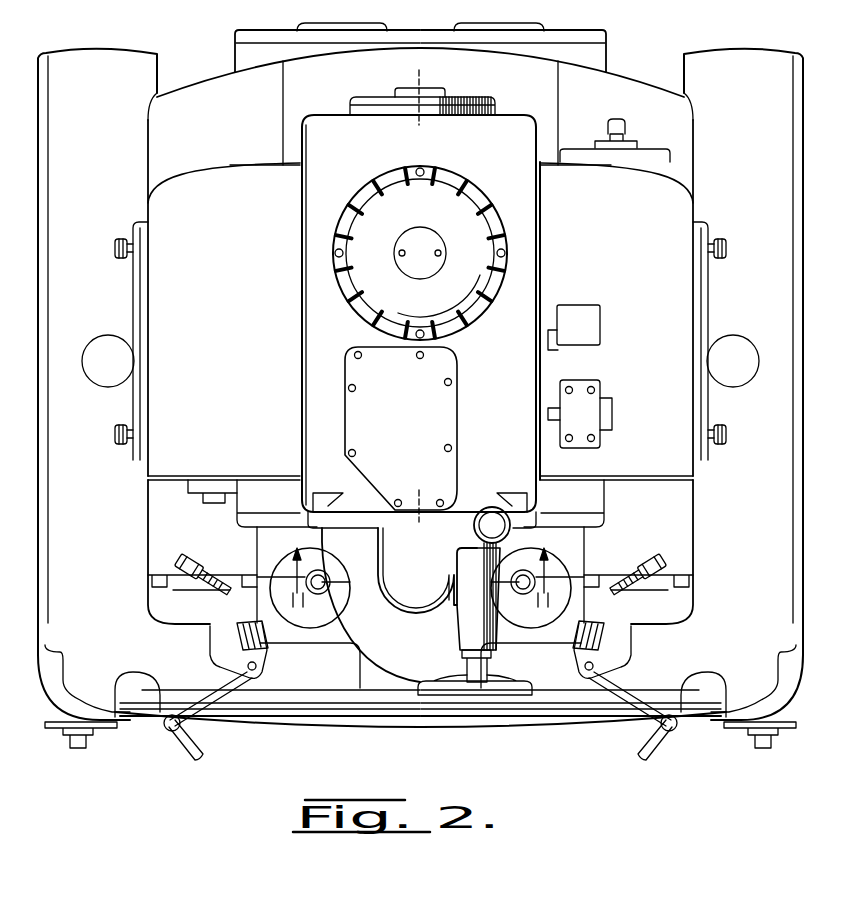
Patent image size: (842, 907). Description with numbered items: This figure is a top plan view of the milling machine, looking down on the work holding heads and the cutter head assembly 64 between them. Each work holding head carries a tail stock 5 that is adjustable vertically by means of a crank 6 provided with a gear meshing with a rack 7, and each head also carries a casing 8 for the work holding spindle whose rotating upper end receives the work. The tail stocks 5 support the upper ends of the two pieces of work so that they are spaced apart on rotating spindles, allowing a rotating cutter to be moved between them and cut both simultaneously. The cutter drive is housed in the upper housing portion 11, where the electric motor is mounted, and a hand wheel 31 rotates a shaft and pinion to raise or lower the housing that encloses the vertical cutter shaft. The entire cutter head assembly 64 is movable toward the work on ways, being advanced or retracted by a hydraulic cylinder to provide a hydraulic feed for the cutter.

The tail stock 5 is at (360, 552).
The crank 6 is at (208, 722).
The rack 7 is at (222, 580).
The casing 8 is at (445, 72).
The upper housing portion 11 is at (280, 556).
The hand wheel 31 is at (517, 681).
The cutter head assembly 64 is at (328, 334).